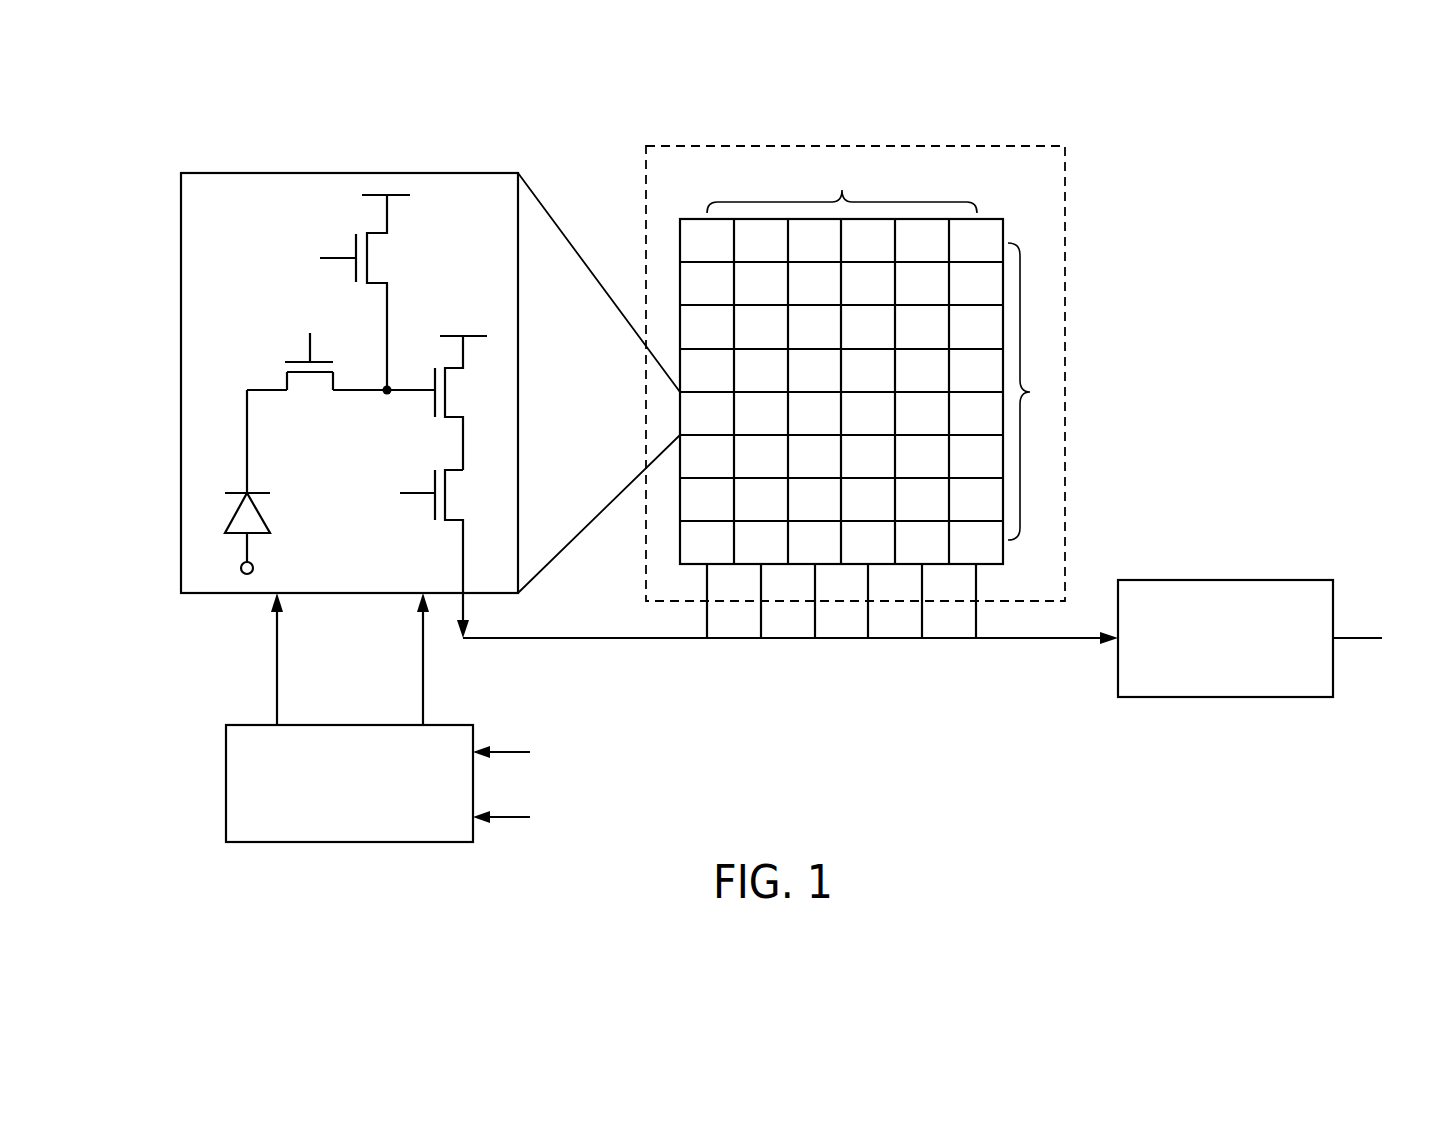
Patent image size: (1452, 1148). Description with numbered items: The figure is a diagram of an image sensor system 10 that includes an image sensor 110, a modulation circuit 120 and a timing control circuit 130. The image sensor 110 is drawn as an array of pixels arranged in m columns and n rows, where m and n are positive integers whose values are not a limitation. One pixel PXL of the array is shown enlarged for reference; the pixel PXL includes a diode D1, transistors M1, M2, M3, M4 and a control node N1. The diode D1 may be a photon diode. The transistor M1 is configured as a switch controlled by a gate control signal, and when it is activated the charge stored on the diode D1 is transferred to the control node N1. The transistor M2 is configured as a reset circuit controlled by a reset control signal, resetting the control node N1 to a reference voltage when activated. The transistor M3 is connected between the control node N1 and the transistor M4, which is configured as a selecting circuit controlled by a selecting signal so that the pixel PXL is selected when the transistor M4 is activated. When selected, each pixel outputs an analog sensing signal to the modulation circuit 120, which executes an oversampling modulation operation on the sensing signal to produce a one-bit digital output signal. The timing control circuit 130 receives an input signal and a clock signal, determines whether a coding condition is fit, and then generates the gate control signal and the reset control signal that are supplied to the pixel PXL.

The image sensor system 10 is at (1368, 131).
The image sensor 110 is at (1065, 225).
The modulation circuit 120 is at (1226, 580).
The timing control circuit 130 is at (226, 783).
The pixel PXL is at (351, 173).
The transistor M1 is at (308, 384).
The transistor M2 is at (345, 292).
The transistor M3 is at (467, 403).
The transistor M4 is at (423, 545).
The control node N1 is at (387, 400).
The diode D1 is at (263, 513).